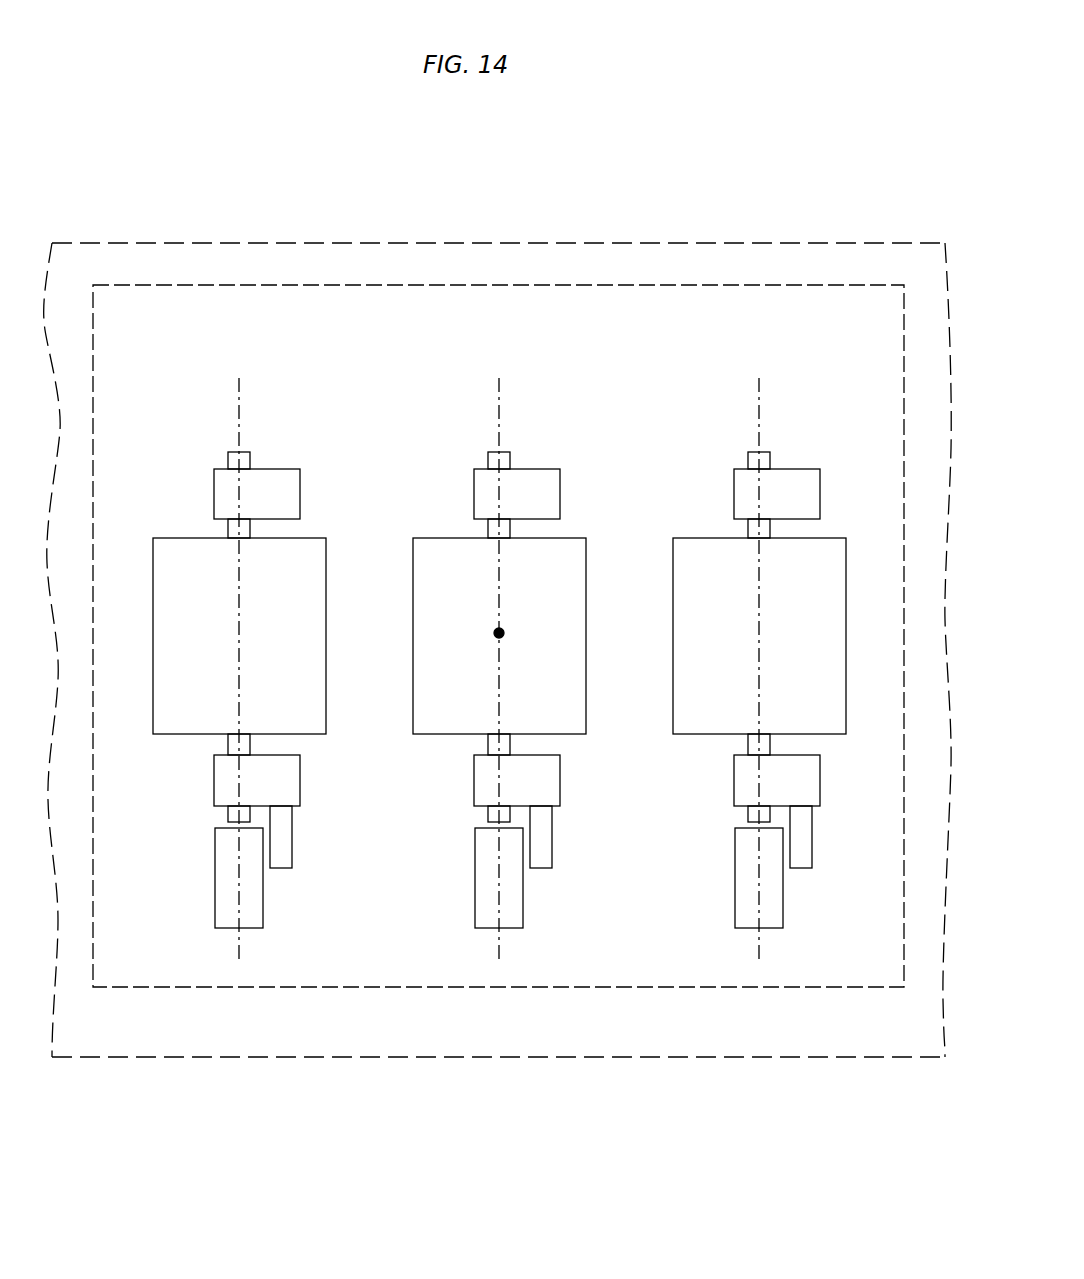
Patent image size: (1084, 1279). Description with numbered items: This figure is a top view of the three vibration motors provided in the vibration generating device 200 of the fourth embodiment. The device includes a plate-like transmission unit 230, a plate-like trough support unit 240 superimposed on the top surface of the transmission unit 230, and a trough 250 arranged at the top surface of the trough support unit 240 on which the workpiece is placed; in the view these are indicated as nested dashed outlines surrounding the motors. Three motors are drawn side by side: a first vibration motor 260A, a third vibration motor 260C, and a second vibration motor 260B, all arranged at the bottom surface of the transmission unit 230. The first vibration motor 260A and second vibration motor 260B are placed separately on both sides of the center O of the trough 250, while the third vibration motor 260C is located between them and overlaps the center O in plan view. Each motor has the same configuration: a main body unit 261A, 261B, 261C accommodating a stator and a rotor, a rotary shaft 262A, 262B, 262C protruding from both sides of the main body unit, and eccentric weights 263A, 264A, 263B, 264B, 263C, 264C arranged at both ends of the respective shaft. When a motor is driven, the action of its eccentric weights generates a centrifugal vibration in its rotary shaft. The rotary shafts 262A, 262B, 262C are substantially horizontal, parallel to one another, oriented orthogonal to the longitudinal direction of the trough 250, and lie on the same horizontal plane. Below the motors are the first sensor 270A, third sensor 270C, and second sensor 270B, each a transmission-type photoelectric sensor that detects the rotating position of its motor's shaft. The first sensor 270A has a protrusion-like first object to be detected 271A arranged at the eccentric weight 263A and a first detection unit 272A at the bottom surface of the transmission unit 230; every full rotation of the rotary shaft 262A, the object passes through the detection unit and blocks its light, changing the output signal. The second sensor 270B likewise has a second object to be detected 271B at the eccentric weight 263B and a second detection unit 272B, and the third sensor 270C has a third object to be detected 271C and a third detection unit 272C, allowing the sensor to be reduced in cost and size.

The vibration generating device 200 is at (845, 177).
The transmission unit 230 is at (392, 258).
The trough support unit 240 is at (498, 605).
The trough 250 is at (572, 317).
The first vibration motor 260A is at (202, 430).
The second vibration motor 260B is at (797, 430).
The third vibration motor 260C is at (473, 435).
The main body unit 261A is at (193, 573).
The main body unit 261B is at (713, 573).
The main body unit 261C is at (453, 573).
The rotary shaft 262A is at (229, 740).
The rotary shaft 262B is at (749, 740).
The rotary shaft 262C is at (489, 740).
The eccentric weight 263A is at (280, 783).
The eccentric weight 263B is at (800, 783).
The eccentric weight 263C is at (540, 783).
The eccentric weight 264A is at (280, 495).
The eccentric weight 264B is at (800, 495).
The eccentric weight 264C is at (540, 495).
The first sensor 270A is at (371, 1137).
The second sensor 270B is at (891, 1137).
The third sensor 270C is at (631, 1137).
The first object to be detected 271A is at (280, 860).
The second object to be detected 271B is at (800, 860).
The third object to be detected 271C is at (540, 860).
The first detection unit 272A is at (228, 918).
The second detection unit 272B is at (748, 918).
The third detection unit 272C is at (488, 918).